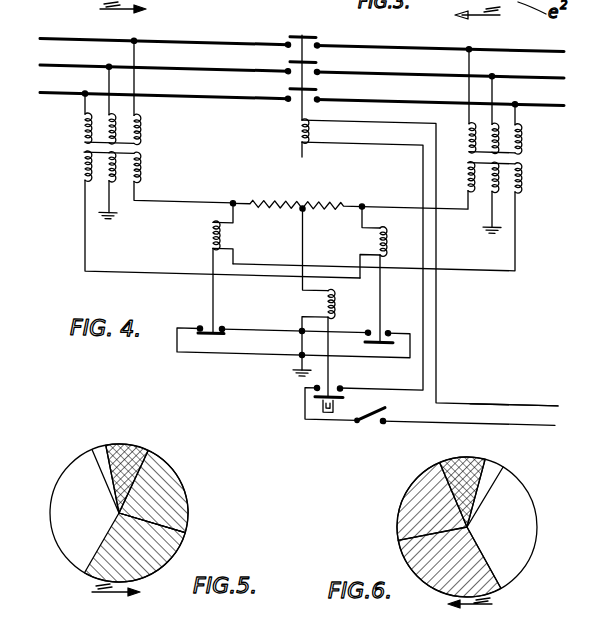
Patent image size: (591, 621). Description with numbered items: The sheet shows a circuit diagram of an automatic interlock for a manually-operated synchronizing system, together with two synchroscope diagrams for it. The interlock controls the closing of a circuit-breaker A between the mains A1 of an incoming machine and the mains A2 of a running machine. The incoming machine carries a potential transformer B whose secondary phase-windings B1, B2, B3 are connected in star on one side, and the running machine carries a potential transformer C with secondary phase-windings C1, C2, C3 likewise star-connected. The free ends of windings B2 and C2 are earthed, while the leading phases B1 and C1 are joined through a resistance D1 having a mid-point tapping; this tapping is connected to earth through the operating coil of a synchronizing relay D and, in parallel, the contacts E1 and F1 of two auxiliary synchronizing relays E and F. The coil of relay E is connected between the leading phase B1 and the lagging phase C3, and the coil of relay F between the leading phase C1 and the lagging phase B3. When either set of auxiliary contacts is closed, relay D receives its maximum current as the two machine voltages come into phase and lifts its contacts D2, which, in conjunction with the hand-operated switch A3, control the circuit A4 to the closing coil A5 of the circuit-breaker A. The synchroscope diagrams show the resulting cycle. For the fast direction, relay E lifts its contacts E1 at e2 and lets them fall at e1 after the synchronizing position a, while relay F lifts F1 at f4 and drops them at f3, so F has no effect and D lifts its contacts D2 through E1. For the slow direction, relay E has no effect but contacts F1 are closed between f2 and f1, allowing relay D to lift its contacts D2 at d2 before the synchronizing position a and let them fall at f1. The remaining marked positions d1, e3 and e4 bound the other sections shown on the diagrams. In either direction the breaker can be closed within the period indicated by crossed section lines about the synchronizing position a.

In FIG. 4, the circuit-breaker A is at (323, 50).
In FIG. 4, the mains of incoming machine A1 is at (235, 39).
In FIG. 4, the mains of running machine A2 is at (392, 38).
In FIG. 4, the hand-operated switch A3 is at (359, 414).
In FIG. 4, the closing circuit A4 is at (515, 414).
In FIG. 4, the closing coil A5 is at (295, 118).
In FIG. 4, the potential transformer of incoming machine B is at (80, 143).
In FIG. 4, the leading phase secondary winding B1 is at (138, 152).
In FIG. 4, the secondary phase-winding B2 is at (86, 168).
In FIG. 4, the lagging phase secondary winding B3 is at (82, 158).
In FIG. 4, the potential transformer of running machine C is at (519, 144).
In FIG. 4, the leading phase secondary winding C1 is at (466, 158).
In FIG. 4, the secondary phase-winding C2 is at (519, 170).
In FIG. 4, the lagging phase secondary winding C3 is at (520, 160).
In FIG. 4, the synchronizing relay D is at (322, 294).
In FIG. 4, the resistance with mid-point tapping D1 is at (300, 194).
In FIG. 4, the synchronizing relay contacts D2 is at (303, 386).
In FIG. 4, the auxiliary synchronizing relay E is at (205, 231).
In FIG. 4, the contacts of auxiliary relay E E1 is at (213, 330).
In FIG. 4, the auxiliary synchronizing relay F is at (388, 231).
In FIG. 4, the contacts of auxiliary relay F F1 is at (395, 333).
In FIG. 5, the synchronizing position a is at (120, 443).
In FIG. 6, the synchronizing position a is at (466, 456).
In FIG. 6, the sector d1 is at (438, 460).
In FIG. 5, the lifting position of contacts D2 d2 is at (148, 452).
In FIG. 6, the falling position of contacts E1 e1 is at (487, 460).
In FIG. 6, the lifting position of contacts E1 e2 is at (501, 588).
In FIG. 5, the sector e3 is at (185, 532).
In FIG. 5, the sector e4 is at (92, 450).
In FIG. 5, the falling position of contacts F1 f1 is at (106, 445).
In FIG. 5, the lifting position of contacts F1 f2 is at (85, 572).
In FIG. 6, the falling position of contacts F1 f3 is at (400, 540).
In FIG. 6, the lifting position of contacts F1 f4 is at (504, 467).